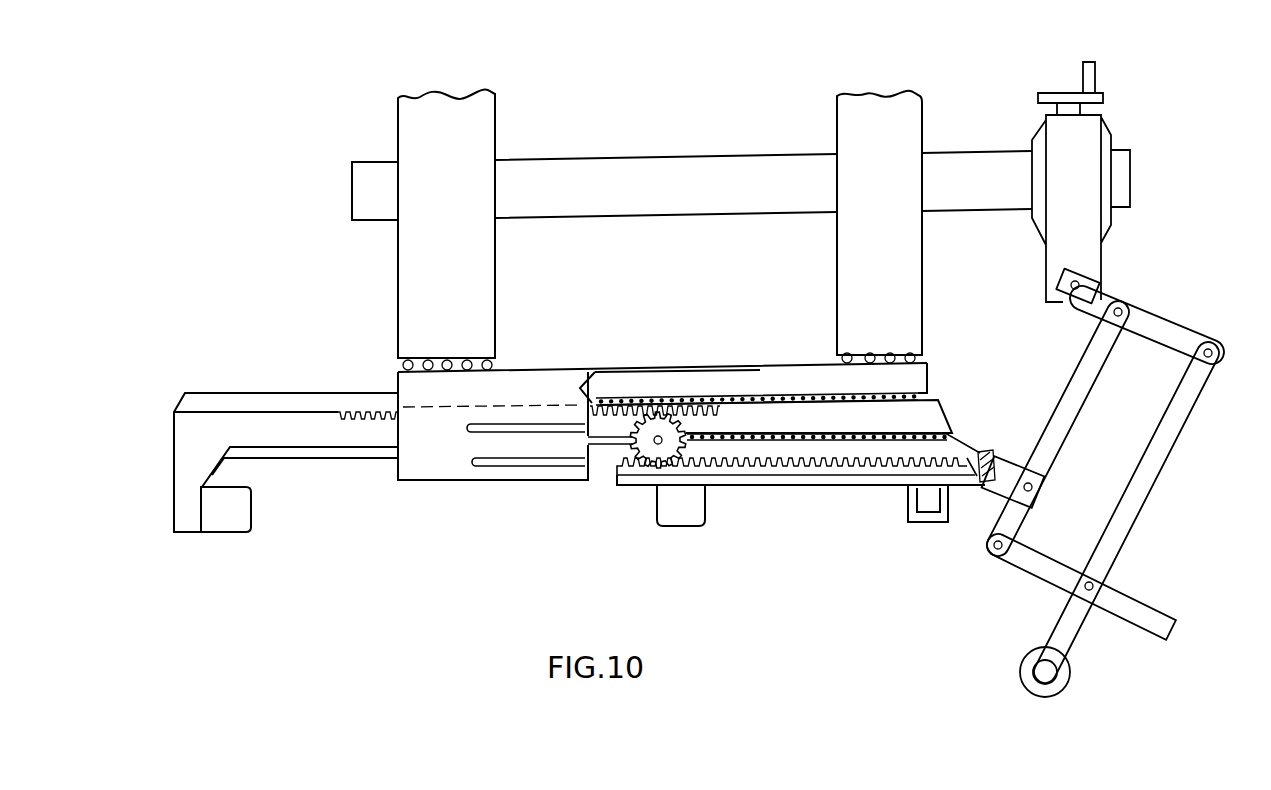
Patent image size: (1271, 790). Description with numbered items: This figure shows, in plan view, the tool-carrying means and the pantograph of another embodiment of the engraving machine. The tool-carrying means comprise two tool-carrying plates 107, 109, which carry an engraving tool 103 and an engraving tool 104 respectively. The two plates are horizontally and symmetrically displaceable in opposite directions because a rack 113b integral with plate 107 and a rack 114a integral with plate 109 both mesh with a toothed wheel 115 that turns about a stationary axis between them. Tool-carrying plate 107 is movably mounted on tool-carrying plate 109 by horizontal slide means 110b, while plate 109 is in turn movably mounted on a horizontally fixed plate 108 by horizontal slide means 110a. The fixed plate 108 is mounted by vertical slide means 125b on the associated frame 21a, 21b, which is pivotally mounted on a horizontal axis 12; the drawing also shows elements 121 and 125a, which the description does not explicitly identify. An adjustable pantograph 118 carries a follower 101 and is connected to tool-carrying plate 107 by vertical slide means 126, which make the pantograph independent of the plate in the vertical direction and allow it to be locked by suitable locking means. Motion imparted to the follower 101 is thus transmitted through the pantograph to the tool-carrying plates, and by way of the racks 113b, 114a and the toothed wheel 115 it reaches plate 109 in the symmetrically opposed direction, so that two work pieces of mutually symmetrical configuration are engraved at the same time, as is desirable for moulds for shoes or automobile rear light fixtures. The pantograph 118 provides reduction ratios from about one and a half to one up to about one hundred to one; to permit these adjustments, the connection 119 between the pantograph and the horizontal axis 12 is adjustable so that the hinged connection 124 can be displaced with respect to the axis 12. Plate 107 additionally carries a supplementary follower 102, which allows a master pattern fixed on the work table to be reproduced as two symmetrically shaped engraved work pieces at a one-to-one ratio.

The horizontal axis 12 is at (972, 182).
The frame 21a is at (870, 257).
The frame 21b is at (430, 263).
The follower 101 is at (1047, 675).
The supplementary follower 102 is at (925, 505).
The engraving tool 103 is at (688, 503).
The engraving tool 104 is at (225, 522).
The tool-carrying plate 107 is at (842, 448).
The horizontally fixed plate 108 is at (450, 465).
The tool-carrying plate 109 is at (193, 430).
The horizontal slide means 110a is at (282, 405).
The horizontal slide means 110b is at (287, 450).
The rack 113b is at (801, 512).
The rack 114a is at (360, 412).
The toothed wheel 115 is at (647, 441).
The pantograph 118 is at (1157, 437).
The connection 119 is at (1073, 145).
The guide slots 121 is at (531, 460).
The hinged connection 124 is at (1085, 290).
The rollers 125a is at (498, 364).
The vertical slide means 125b is at (920, 356).
The vertical slide means 126 is at (974, 484).